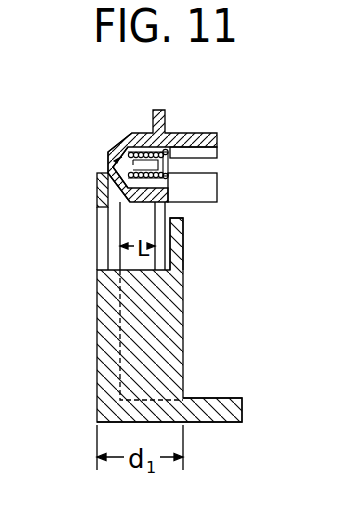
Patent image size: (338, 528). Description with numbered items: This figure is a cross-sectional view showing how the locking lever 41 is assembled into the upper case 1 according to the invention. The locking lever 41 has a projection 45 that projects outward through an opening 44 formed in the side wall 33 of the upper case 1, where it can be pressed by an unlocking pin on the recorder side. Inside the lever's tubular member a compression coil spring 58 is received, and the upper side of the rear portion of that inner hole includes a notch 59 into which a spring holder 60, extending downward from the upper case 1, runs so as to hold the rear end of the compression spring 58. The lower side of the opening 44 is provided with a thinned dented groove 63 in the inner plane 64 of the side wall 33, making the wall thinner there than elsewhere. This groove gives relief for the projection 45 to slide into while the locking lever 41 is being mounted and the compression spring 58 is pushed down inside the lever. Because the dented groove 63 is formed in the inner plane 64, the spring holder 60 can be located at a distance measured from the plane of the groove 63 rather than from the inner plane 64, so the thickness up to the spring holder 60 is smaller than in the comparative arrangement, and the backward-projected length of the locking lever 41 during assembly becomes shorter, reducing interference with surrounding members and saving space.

The upper case 1 is at (214, 427).
The side wall 33 is at (96, 334).
The locking lever 41 is at (212, 131).
The opening 44 is at (103, 258).
The projection 45 is at (118, 150).
The compression coil spring 58 is at (174, 150).
The notch 59 is at (198, 188).
The spring holder 60 is at (183, 246).
The dented groove 63 is at (112, 204).
The inner plane 64 is at (133, 371).